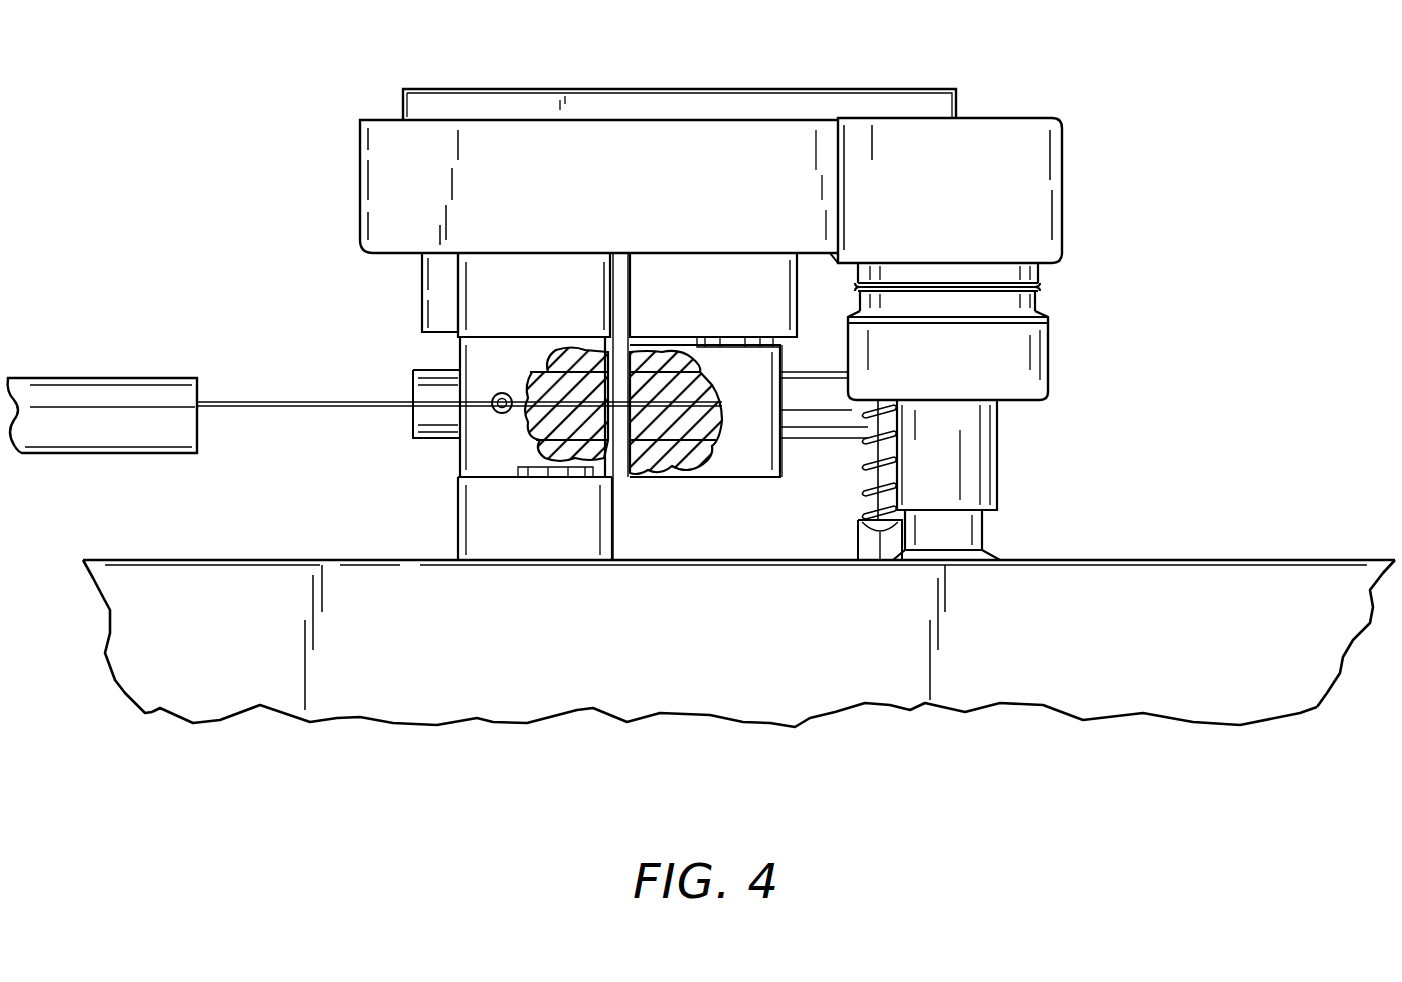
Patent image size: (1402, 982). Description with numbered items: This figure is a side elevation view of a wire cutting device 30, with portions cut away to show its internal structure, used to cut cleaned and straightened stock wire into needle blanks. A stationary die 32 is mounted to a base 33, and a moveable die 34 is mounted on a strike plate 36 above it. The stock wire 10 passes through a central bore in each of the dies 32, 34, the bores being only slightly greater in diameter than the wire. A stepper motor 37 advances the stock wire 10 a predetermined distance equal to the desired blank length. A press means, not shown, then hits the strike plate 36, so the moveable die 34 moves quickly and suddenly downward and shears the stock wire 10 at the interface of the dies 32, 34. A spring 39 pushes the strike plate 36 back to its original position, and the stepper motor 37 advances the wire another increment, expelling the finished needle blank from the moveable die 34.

The wire cutting device 30 is at (1100, 90).
The strike plate 36 is at (868, 90).
The stepper motor 37 is at (97, 453).
The stock wire 10 is at (278, 400).
The stationary die 32 is at (530, 420).
The moveable die 34 is at (650, 477).
The spring 39 is at (862, 490).
The base 33 is at (712, 657).